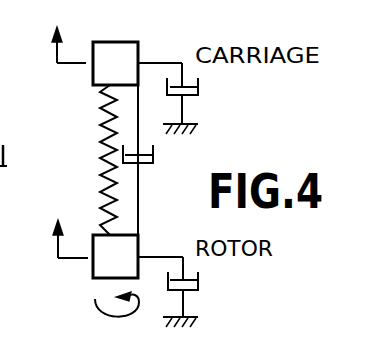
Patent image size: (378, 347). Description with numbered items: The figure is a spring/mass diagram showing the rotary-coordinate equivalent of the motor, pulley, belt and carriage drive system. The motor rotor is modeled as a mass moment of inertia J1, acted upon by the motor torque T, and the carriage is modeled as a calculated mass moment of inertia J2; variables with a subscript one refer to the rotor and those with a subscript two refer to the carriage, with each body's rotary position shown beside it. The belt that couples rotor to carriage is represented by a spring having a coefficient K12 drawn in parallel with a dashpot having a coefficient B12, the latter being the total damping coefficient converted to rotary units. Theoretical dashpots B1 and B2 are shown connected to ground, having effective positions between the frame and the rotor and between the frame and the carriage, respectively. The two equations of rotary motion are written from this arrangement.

The carriage mass moment of inertia J2 is at (115, 63).
The rotor mass moment of inertia J1 is at (115, 256).
The spring coefficient K12 is at (86, 160).
The dashpot coefficient B12 is at (161, 160).
The theoretical dashpot B2 is at (184, 98).
The theoretical dashpot B1 is at (183, 292).
The torque T is at (117, 319).